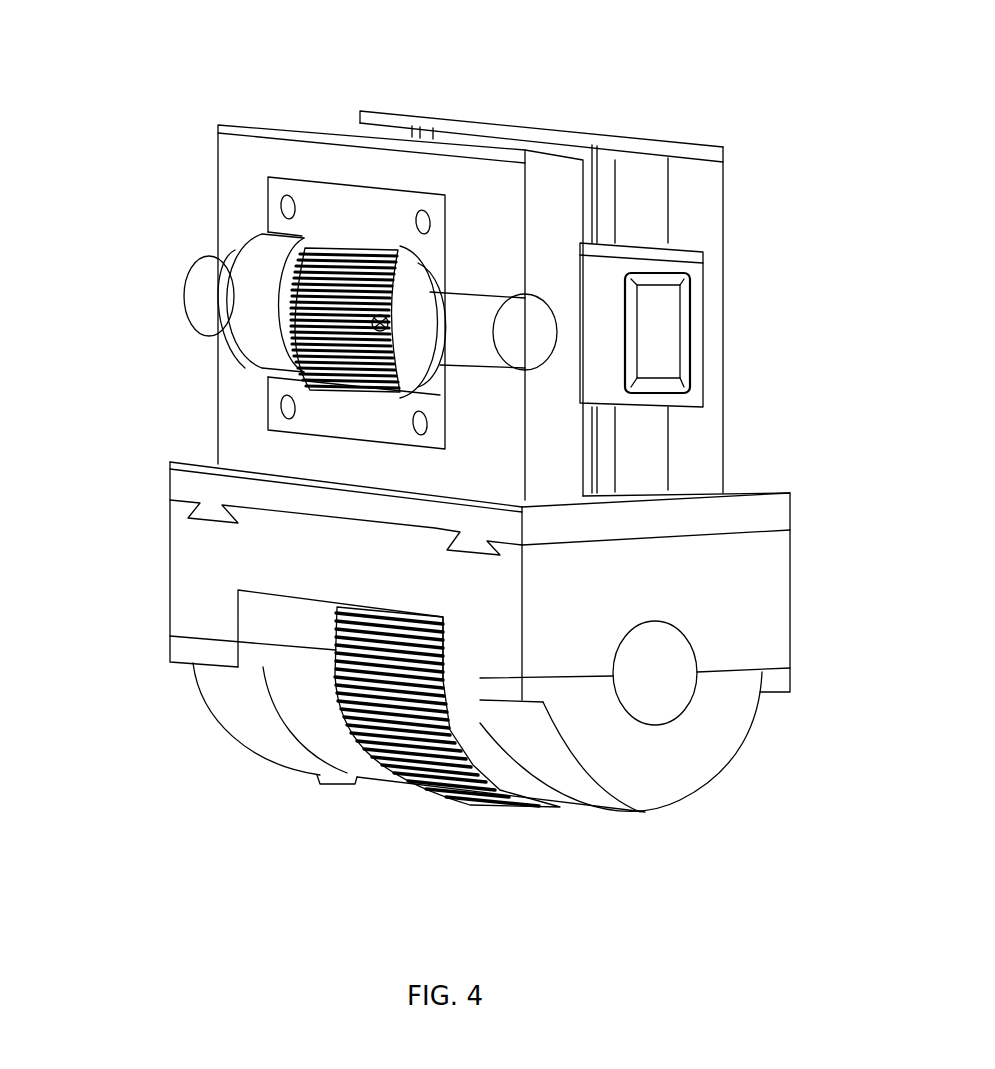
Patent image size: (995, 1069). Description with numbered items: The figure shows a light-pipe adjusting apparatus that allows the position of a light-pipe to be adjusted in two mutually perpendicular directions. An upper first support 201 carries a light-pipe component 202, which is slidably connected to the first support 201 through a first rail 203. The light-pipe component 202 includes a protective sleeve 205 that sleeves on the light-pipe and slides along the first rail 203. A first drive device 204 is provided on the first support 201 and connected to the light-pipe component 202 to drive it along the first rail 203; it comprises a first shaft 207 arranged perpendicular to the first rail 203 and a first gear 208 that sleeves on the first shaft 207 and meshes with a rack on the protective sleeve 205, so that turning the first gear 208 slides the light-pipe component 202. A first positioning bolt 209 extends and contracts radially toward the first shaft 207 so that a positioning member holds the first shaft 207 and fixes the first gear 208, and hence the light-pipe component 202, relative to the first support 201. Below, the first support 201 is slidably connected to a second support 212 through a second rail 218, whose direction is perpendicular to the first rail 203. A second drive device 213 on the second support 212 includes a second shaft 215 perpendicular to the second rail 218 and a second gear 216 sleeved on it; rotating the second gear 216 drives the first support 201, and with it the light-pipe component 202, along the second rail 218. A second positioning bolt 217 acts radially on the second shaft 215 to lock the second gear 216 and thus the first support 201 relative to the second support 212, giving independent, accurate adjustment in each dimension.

The first support 201 is at (510, 198).
The light-pipe component 202 is at (663, 333).
The first rail 203 is at (603, 177).
The first drive device 204 is at (268, 44).
The protective sleeve 205 is at (630, 253).
The first shaft 207 is at (203, 295).
The first gear 208 is at (330, 250).
The first positioning bolt 209 is at (382, 318).
The second support 212 is at (740, 617).
The second drive device 213 is at (607, 905).
The second shaft 215 is at (660, 690).
The second gear 216 is at (448, 795).
The second positioning bolt 217 is at (337, 783).
The second rail 218 is at (213, 522).